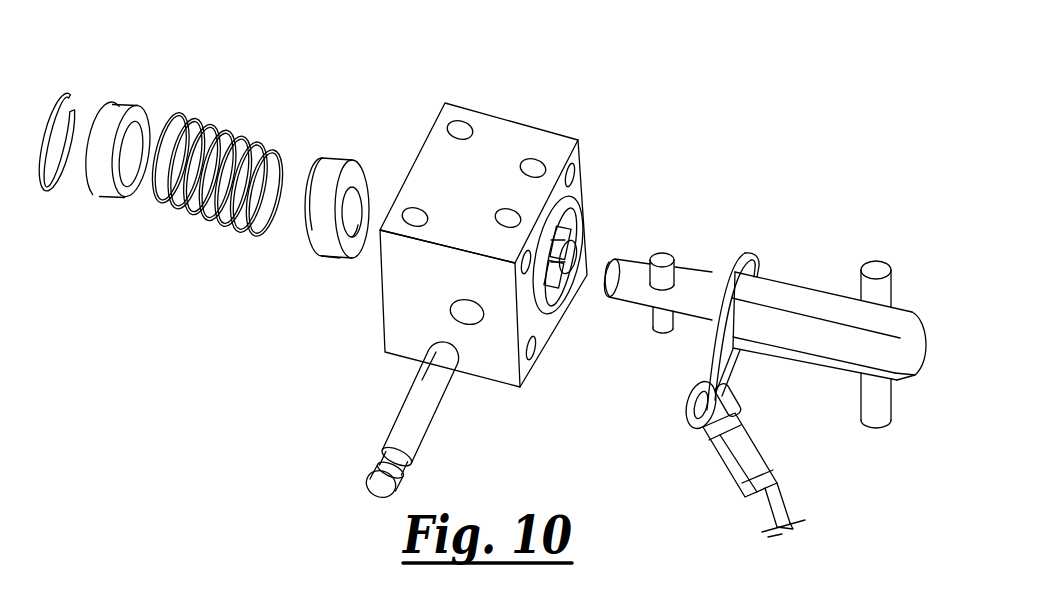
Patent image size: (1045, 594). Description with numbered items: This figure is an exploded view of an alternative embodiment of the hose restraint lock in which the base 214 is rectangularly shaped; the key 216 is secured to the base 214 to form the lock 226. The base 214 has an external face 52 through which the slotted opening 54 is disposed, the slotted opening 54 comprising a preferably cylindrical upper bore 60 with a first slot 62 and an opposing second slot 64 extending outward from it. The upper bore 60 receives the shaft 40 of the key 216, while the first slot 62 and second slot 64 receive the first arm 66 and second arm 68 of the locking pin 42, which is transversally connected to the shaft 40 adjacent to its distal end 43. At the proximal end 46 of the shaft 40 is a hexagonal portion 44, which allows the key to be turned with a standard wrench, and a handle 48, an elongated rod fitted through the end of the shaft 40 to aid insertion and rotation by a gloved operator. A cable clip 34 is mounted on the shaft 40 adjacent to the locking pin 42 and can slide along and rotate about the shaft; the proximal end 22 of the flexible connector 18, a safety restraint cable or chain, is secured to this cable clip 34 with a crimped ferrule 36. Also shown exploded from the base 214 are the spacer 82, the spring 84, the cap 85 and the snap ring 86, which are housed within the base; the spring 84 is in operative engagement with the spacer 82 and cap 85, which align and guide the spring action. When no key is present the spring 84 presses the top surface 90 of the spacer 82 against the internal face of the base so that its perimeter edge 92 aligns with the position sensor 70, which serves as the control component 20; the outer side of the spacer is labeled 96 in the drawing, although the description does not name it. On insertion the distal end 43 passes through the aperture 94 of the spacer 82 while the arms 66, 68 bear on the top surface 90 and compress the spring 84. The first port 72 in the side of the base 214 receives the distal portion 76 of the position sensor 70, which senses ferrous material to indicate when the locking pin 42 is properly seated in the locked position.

The snap ring 86 is at (64, 94).
The cap 85 is at (128, 112).
The spring 84 is at (228, 133).
The spacer 82 is at (336, 213).
The aperture 94 is at (358, 197).
The plug outer surface 96 is at (310, 236).
The perimeter edge 92 is at (328, 250).
The top surface 90 is at (360, 240).
The base 214 is at (500, 229).
The lock 226 is at (641, 71).
The key 216 is at (770, 328).
The second slot 64 is at (564, 236).
The slotted opening 54 is at (567, 238).
The upper bore 60 is at (563, 257).
The first slot 62 is at (560, 297).
The external face 52 is at (545, 305).
The first port 72 is at (462, 318).
The distal portion 76 is at (453, 378).
The control component 20 is at (459, 422).
The position sensor 70 is at (459, 422).
The locking pin 42 is at (662, 280).
The distal end 43 is at (613, 299).
The second arm 68 is at (662, 254).
The first arm 66 is at (672, 330).
The shaft 40 is at (821, 331).
The hexagonal portion 44 is at (834, 349).
The proximal end 46 is at (901, 388).
The handle 48 is at (862, 270).
The cable clip 34 is at (710, 365).
The proximal end 22 is at (740, 415).
The crimped ferrule 36 is at (720, 464).
The flexible connector 18 is at (768, 520).